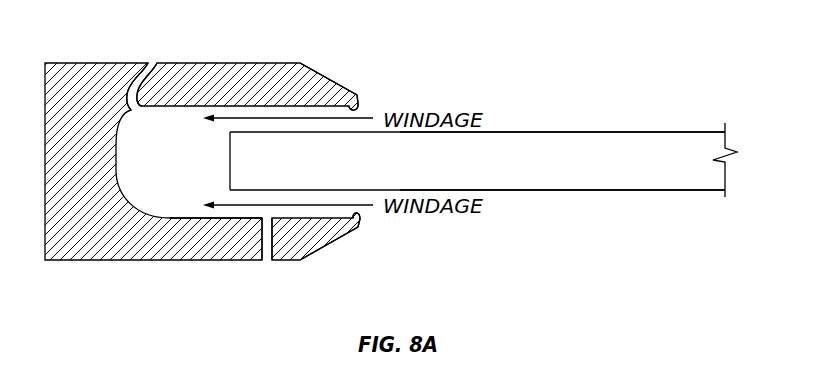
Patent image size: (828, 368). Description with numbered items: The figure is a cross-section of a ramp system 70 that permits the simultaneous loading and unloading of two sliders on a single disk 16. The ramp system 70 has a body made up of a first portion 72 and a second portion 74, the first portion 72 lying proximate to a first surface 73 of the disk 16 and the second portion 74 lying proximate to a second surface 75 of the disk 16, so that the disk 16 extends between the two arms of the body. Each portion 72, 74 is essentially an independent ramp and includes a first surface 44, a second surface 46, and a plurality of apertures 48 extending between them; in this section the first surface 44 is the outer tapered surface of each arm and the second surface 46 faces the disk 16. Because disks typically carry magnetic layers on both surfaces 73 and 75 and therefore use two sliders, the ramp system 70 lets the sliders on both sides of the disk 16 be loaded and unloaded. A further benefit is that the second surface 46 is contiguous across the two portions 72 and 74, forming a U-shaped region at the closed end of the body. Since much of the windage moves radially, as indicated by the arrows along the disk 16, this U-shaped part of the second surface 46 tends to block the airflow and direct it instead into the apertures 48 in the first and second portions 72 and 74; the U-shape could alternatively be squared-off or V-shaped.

The disk 16 is at (499, 173).
The first surface 44 is at (272, 63).
The second surface 46 is at (362, 106).
The apertures 48 is at (154, 56).
The ramp system 70 is at (88, 173).
The first portion 72 is at (278, 93).
The first surface of the disk 73 is at (543, 131).
The second portion 74 is at (241, 248).
The second surface of the disk 75 is at (540, 190).